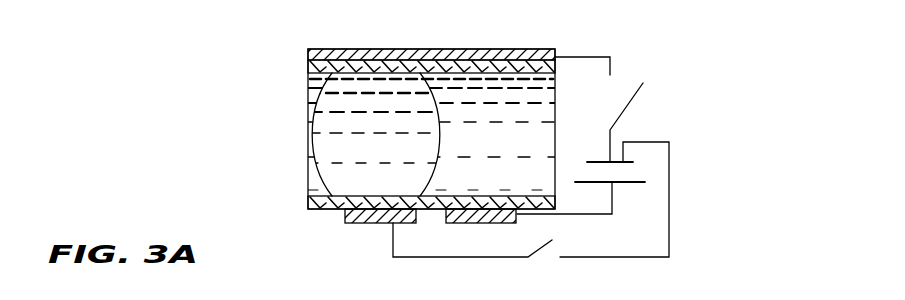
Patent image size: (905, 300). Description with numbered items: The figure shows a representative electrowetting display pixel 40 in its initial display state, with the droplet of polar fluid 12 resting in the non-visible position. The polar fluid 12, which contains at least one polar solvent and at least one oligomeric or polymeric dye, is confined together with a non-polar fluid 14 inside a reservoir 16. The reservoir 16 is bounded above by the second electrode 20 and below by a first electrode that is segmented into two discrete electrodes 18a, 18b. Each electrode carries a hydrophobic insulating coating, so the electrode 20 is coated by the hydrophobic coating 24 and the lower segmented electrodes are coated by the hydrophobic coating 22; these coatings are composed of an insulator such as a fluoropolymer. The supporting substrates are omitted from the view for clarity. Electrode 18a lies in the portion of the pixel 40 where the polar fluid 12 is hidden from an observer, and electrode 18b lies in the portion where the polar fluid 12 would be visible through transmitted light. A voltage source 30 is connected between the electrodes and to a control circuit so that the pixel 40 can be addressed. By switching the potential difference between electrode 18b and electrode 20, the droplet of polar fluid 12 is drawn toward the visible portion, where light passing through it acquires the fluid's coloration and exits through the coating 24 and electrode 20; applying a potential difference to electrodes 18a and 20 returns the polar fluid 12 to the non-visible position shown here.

The pixel 40 is at (742, 66).
The second electrode 20 is at (308, 52).
The hydrophobic coating 24 is at (308, 66).
The polar fluid 12 is at (320, 181).
The non-polar fluid 14 is at (549, 168).
The reservoir 16 is at (545, 93).
The hydrophobic coating 22 is at (308, 203).
The first electrode segment 18a is at (365, 223).
The second electrode segment 18b is at (466, 223).
The voltage source 30 is at (620, 184).